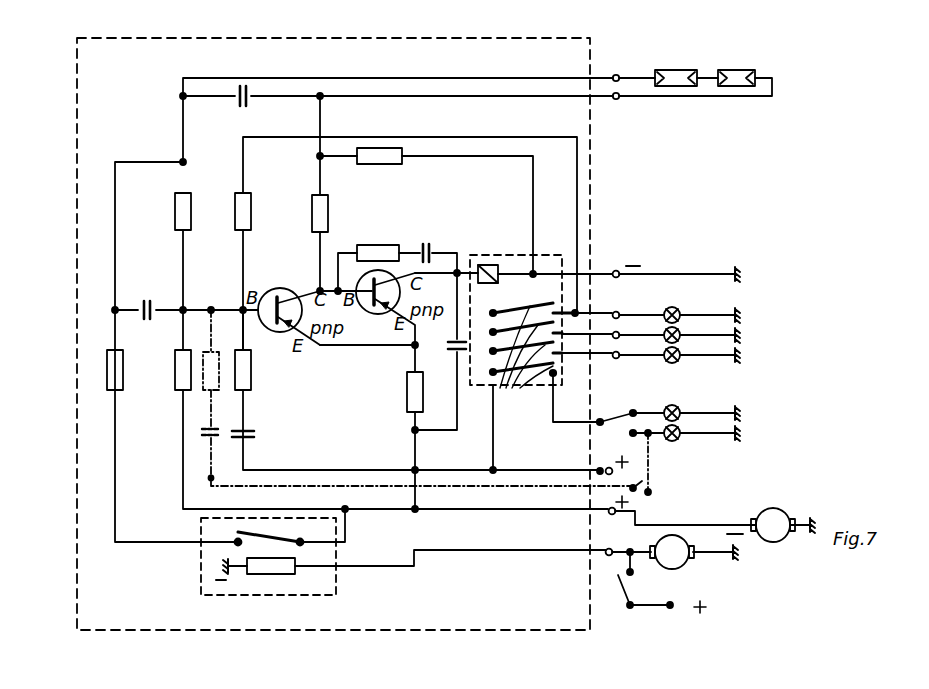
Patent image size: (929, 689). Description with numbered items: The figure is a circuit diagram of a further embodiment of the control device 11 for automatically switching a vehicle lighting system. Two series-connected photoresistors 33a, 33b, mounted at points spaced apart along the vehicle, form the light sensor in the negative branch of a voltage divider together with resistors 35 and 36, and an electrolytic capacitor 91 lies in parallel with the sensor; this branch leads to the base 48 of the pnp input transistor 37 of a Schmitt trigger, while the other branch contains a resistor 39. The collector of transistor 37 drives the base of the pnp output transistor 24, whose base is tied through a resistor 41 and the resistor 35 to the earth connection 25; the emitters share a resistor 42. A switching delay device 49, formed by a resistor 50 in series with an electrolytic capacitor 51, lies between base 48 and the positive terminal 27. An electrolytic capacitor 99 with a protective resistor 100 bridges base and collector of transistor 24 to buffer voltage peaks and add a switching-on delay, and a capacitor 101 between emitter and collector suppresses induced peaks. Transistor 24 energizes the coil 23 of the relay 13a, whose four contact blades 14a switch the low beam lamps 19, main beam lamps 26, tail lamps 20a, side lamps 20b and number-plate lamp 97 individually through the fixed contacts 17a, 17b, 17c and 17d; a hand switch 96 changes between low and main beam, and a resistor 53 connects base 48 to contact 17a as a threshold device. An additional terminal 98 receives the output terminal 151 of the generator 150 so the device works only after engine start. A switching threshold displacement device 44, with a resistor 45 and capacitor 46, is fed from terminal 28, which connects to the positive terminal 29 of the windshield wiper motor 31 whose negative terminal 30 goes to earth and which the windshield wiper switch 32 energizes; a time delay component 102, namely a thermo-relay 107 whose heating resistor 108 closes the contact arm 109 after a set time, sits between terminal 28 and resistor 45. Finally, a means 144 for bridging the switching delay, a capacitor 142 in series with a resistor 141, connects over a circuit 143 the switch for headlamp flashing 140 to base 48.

The control device 11 is at (77, 105).
The electrolytic capacitor 91 is at (240, 104).
The photoresistor 33a is at (732, 72).
The photoresistor 33b is at (668, 72).
The resistor 36 is at (177, 215).
The resistor 53 is at (237, 218).
The resistor 41 is at (312, 212).
The resistor 35 is at (385, 165).
The capacitor 46 is at (152, 320).
The resistor 45 is at (107, 372).
The resistor 39 is at (190, 385).
The switching threshold displacement device 44 is at (144, 407).
The resistor 141 is at (210, 350).
The capacitor 142 is at (206, 436).
The means for bridging the switching delay 144 is at (212, 479).
The base 48 is at (246, 316).
The resistor 50 is at (251, 388).
The switching delay device 49 is at (291, 399).
The electrolytic capacitor 51 is at (249, 438).
The transistor 37 is at (268, 292).
The transistor 24 is at (392, 322).
The resistor 100 is at (376, 245).
The electrolytic capacitor 99 is at (427, 243).
The resistor 42 is at (408, 392).
The capacitor 101 is at (455, 352).
The relay 13a is at (512, 256).
The coil 23 is at (488, 265).
The contact blades 14a is at (525, 361).
The fixed contact 17a is at (553, 302).
The fixed contact 17b is at (560, 330).
The fixed contact 17c is at (560, 350).
The fixed contact 17d is at (553, 378).
The switch 96 is at (618, 430).
The earth connection 25 is at (616, 270).
The tail lamps 20a is at (676, 306).
The side lamps 20b is at (680, 332).
The number-plate lamp 97 is at (678, 362).
The low beam lamps 19 is at (680, 407).
The main beam lamps 26 is at (680, 440).
The terminal 27 is at (612, 474).
The switch for headlamp flashing 140 is at (655, 488).
The terminal 98 is at (616, 514).
The terminal 28 is at (600, 556).
The time delay component 102 is at (350, 580).
The circuit 143 is at (475, 488).
The contact arm 109 is at (299, 494).
The negative terminal 30 is at (675, 547).
The windshield wiper motor 31 is at (660, 548).
The positive terminal 29 is at (690, 556).
The windshield wiper switch 32 is at (618, 588).
The vehicle generator 150 is at (775, 511).
The output terminal 151 is at (757, 518).
The thermo-relay 107 is at (236, 564).
The heating resistor 108 is at (268, 575).